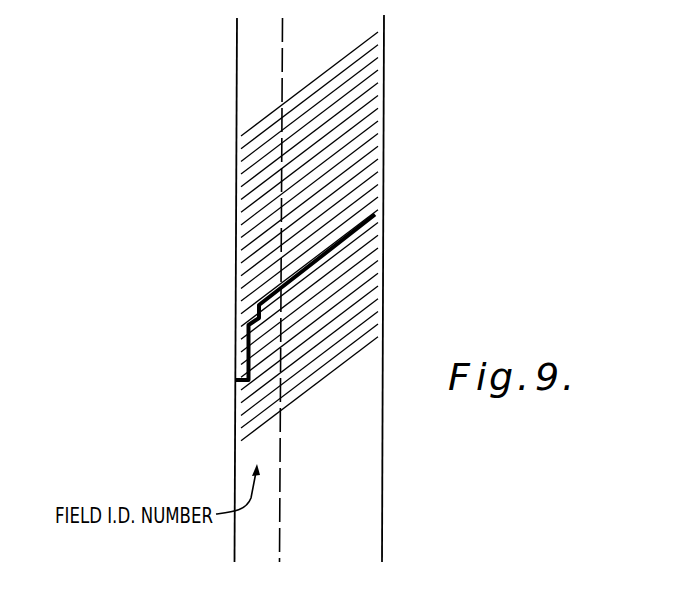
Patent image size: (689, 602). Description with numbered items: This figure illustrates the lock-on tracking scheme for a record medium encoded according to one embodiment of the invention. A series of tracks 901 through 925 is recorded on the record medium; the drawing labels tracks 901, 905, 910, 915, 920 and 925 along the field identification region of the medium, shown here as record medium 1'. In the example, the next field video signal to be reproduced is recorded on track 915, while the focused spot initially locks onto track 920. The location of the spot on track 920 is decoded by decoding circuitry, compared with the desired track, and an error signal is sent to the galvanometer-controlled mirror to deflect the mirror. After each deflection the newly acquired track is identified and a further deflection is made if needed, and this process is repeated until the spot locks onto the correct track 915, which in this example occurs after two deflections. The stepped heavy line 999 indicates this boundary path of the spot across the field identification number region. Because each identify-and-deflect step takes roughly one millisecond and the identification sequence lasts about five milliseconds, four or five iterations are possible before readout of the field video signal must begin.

The recording track 1' is at (225, 290).
The track 901 is at (252, 127).
The track 905 is at (252, 178).
The track 910 is at (250, 244).
The track 915 is at (250, 310).
The track 920 is at (237, 380).
The track 925 is at (252, 436).
The field identification number boundary line 999 is at (373, 216).